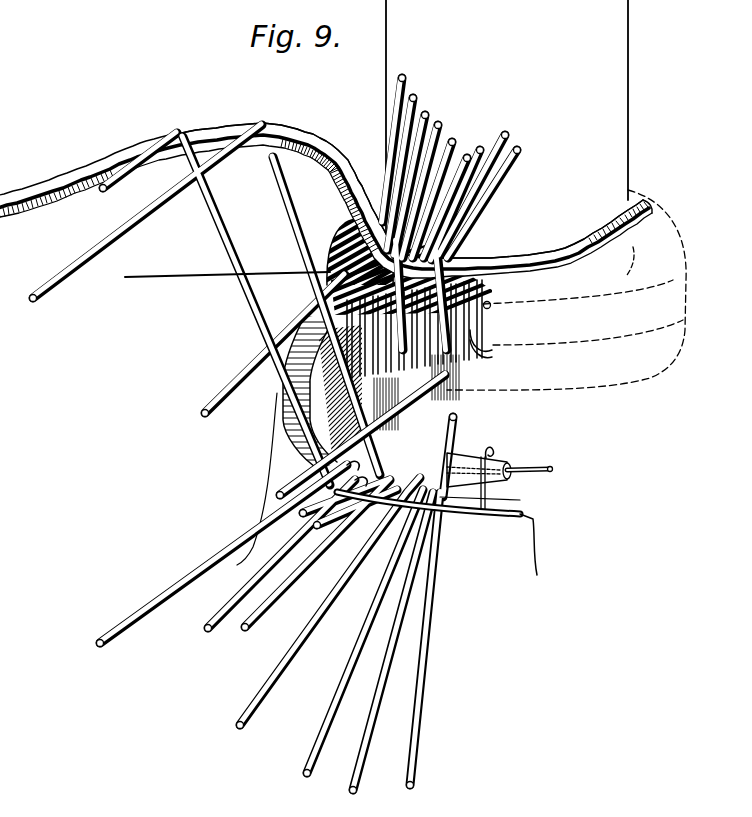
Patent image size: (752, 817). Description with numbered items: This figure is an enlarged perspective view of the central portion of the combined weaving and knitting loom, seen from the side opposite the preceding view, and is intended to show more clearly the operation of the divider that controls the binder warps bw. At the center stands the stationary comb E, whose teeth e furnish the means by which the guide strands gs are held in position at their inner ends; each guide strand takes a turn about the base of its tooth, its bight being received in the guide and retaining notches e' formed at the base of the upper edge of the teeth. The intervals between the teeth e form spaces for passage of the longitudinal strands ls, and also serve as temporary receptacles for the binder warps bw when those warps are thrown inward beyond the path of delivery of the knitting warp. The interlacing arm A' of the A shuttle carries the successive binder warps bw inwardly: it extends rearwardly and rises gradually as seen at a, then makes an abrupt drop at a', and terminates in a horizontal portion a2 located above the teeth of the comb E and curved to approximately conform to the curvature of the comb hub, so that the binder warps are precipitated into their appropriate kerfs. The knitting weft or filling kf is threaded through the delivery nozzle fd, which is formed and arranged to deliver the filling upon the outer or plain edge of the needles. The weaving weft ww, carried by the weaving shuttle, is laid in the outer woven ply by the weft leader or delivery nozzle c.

The rising portion of the interlacing arm a is at (326, 200).
The interlacing arm A' is at (237, 114).
The abrupt drop of the interlacing arm a' is at (368, 193).
The horizontal portion of the interlacing arm a2 is at (564, 255).
The comb E is at (536, 195).
The longitudinal strands ls is at (493, 146).
The teeth of the comb e is at (401, 304).
The guide and retaining notches e' is at (519, 317).
The guide strands gs is at (288, 466).
The binder warps bw is at (300, 330).
The weft leader or delivery nozzle c is at (280, 433).
The knitting weft delivery nozzle fd is at (476, 456).
The knitting weft or filling kf is at (536, 466).
The weaving weft ww is at (498, 526).